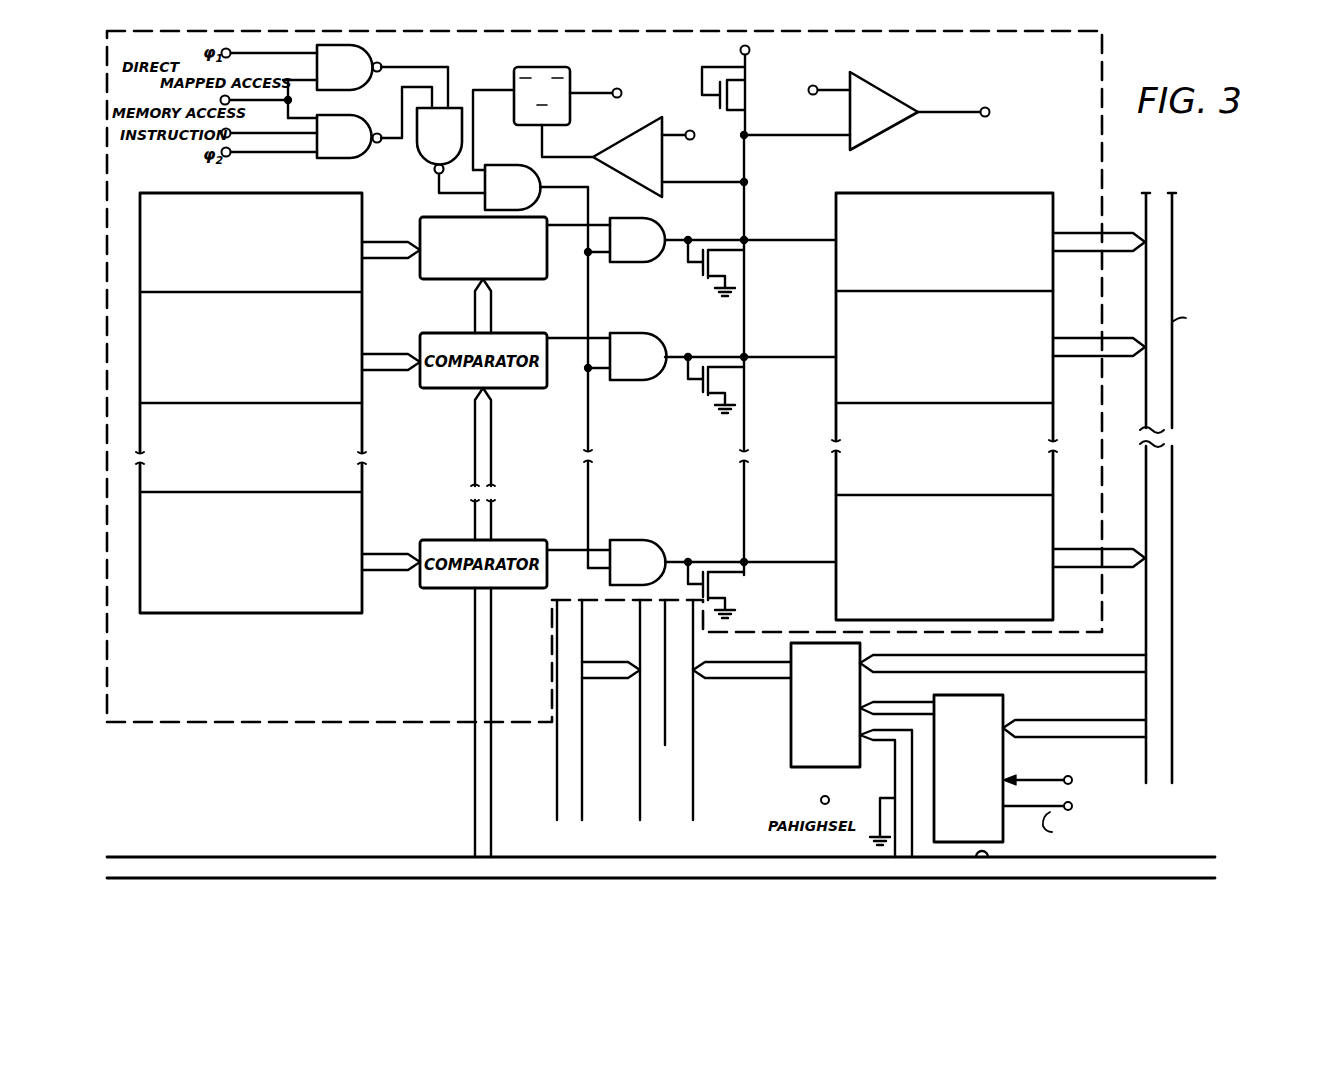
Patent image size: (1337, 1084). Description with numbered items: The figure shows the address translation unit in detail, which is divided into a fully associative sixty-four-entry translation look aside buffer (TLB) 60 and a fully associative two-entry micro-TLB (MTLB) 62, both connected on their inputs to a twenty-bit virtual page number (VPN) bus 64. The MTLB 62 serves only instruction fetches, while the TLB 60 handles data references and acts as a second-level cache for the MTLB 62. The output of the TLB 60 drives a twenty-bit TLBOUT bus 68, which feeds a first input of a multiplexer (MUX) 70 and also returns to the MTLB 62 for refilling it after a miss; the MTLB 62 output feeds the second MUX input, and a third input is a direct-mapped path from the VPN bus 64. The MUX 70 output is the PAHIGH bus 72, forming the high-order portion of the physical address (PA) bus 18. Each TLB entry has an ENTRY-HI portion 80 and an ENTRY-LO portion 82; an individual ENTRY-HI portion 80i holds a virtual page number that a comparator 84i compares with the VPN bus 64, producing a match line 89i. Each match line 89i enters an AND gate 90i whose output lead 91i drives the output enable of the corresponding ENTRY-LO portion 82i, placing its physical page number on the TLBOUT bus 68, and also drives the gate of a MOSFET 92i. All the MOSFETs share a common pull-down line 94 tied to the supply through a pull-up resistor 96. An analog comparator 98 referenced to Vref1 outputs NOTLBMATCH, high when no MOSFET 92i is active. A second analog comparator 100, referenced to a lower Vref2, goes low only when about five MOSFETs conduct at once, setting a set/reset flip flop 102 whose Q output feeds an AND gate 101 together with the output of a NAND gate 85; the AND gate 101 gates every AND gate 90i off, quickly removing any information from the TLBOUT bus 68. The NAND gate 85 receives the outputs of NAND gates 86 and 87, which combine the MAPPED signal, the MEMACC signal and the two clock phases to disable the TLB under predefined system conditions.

The physical address (PA) bus 18 is at (696, 800).
The translation look aside buffer (TLB) 60 is at (604, 376).
The micro-TLB (MTLB) 62 is at (1003, 700).
The virtual page number (VPN) bus 64 is at (628, 857).
The TLBOUT bus 68 is at (1146, 408).
The multiplexer (MUX) 70 is at (919, 750).
The PAHIGH bus 72 is at (693, 722).
The ENTRY-HI portion 80 is at (350, 193).
The ENTRY-HI portion of an individual entry 80i is at (369, 259).
The ENTRY-LO portion 82 is at (1033, 193).
The ENTRY-LO portion of an individual entry 82i is at (1074, 256).
The comparator 84i is at (483, 248).
The NAND gate 85 is at (451, 150).
The NAND gate 86 is at (335, 76).
The NAND gate 87 is at (327, 122).
The match line 89i is at (571, 228).
The AND gate 90i is at (606, 240).
The lead 91i is at (797, 238).
The MOSFET 92i is at (715, 267).
The pull-down line 94 is at (745, 162).
The pull-up resistor 96 is at (737, 91).
The analog comparator 98 is at (940, 108).
The second analog comparator 100 is at (668, 157).
The AND gate 101 is at (532, 366).
The set/reset flip flop 102 is at (572, 72).